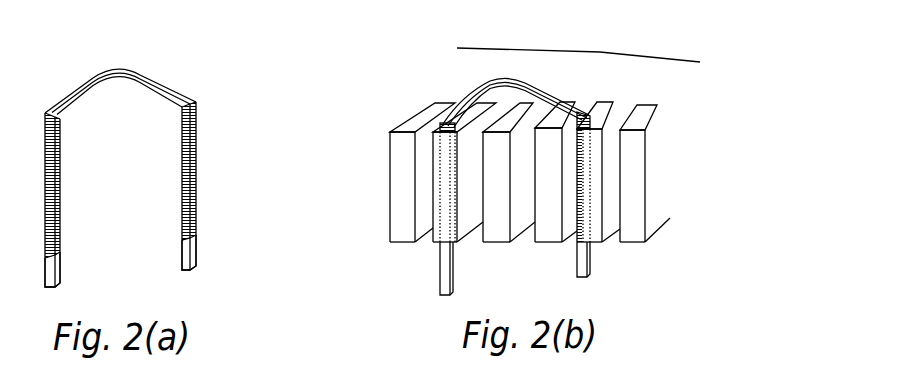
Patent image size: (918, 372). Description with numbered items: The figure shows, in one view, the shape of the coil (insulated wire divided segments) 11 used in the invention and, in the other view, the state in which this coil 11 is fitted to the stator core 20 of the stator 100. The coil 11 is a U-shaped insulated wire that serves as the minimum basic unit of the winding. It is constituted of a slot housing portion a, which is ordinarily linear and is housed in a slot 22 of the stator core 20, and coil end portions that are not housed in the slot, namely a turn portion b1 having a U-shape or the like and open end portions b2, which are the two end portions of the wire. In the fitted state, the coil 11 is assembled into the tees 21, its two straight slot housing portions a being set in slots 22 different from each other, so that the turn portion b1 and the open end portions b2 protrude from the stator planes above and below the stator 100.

In FIG. 2A, the coil (insulated wire divided segments) 11 is at (156, 155).
In FIG. 2B, the coil (insulated wire divided segments) 11 is at (538, 79).
In FIG. 2A, the turn portion b1 is at (168, 88).
In FIG. 2A, the slot housing portion a is at (196, 172).
In FIG. 2A, the open end portions b2 is at (195, 252).
In FIG. 2B, the stator 100 is at (635, 54).
In FIG. 2B, the stator core 20 is at (567, 153).
In FIG. 2B, the tees 21 is at (647, 122).
In FIG. 2B, the slot 22 is at (612, 157).